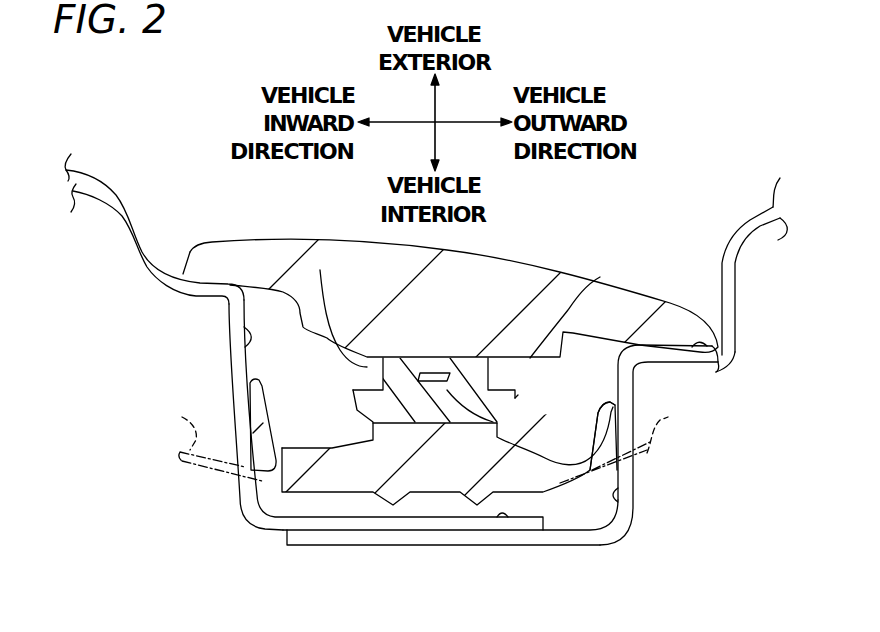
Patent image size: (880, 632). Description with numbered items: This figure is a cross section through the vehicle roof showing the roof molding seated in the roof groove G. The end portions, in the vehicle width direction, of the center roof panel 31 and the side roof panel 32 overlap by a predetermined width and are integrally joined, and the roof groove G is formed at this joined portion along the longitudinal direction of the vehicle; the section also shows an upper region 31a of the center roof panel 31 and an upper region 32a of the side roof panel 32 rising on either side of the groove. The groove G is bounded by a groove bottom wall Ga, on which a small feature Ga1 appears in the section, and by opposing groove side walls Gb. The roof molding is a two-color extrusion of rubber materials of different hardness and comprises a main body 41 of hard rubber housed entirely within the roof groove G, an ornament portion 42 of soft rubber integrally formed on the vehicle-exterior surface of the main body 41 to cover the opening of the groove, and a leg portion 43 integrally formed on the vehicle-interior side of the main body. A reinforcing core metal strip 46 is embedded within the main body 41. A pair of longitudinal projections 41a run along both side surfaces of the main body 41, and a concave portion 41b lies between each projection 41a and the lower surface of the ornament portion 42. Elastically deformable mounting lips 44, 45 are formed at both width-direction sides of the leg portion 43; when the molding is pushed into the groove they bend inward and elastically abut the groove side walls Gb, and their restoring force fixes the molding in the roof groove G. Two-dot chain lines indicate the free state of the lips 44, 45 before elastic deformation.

The center roof panel 31 is at (233, 372).
The upper flange of inner panel 31a is at (183, 270).
The side roof panel 32 is at (633, 513).
The upper portion of outer panel 32a is at (718, 368).
The main body 41 is at (383, 378).
The longitudinal projections 41a is at (357, 400).
The concave portion 41b is at (320, 270).
The ornament portion 42 is at (508, 266).
The leg portion 43 is at (427, 483).
The mounting lip 44 is at (233, 393).
The mounting lip 45 is at (617, 404).
The reinforcing core metal strip 46 is at (500, 422).
The roof groove G is at (583, 518).
The groove bottom wall Ga is at (342, 532).
The protrusion Ga1 is at (508, 518).
The groove side walls Gb is at (233, 327).